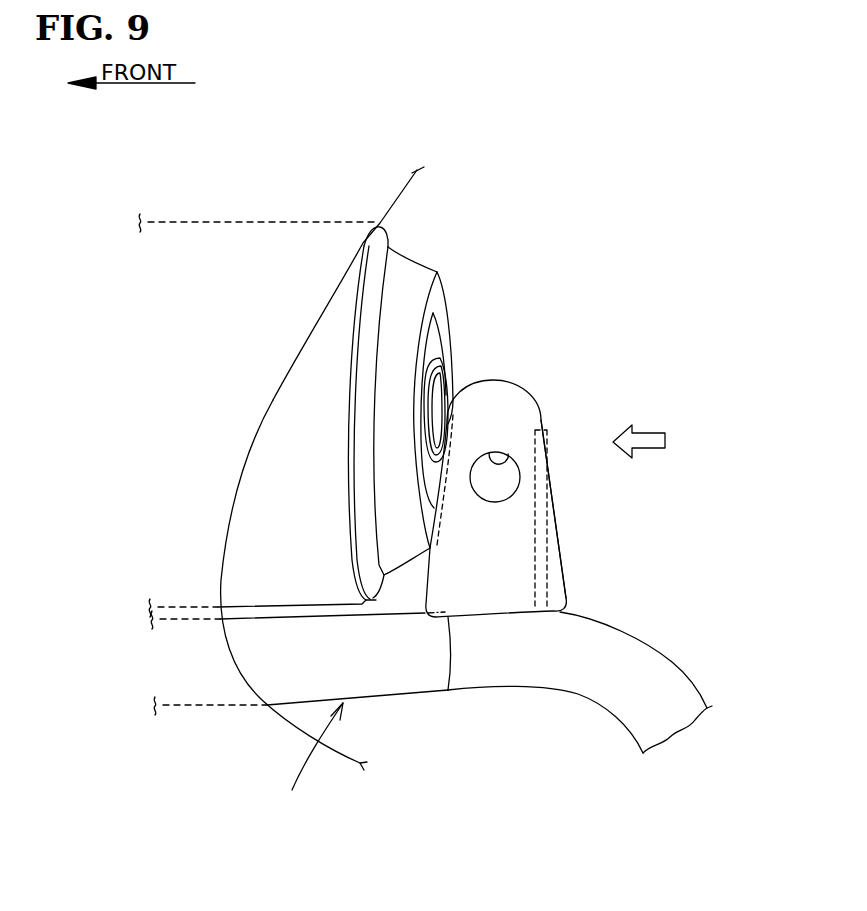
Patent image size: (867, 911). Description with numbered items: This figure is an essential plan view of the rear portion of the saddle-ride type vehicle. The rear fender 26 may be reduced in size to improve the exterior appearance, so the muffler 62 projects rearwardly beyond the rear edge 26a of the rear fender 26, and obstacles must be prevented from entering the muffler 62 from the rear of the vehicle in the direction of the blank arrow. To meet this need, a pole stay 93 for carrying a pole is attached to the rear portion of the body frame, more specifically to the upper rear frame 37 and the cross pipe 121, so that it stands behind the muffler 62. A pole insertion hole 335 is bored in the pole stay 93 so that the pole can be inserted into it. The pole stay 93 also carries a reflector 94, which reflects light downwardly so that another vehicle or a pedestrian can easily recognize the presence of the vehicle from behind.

The rear fender 26 is at (413, 188).
The rear edge 26a is at (230, 520).
The muffler 62 is at (447, 278).
The pole stay 93 is at (523, 383).
The hole 335 is at (508, 455).
The reflector 94 is at (547, 522).
The upper rear frame 37 is at (407, 683).
The cross pipe 121 is at (573, 685).